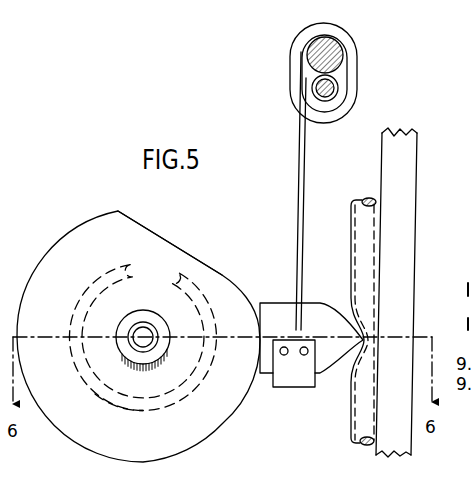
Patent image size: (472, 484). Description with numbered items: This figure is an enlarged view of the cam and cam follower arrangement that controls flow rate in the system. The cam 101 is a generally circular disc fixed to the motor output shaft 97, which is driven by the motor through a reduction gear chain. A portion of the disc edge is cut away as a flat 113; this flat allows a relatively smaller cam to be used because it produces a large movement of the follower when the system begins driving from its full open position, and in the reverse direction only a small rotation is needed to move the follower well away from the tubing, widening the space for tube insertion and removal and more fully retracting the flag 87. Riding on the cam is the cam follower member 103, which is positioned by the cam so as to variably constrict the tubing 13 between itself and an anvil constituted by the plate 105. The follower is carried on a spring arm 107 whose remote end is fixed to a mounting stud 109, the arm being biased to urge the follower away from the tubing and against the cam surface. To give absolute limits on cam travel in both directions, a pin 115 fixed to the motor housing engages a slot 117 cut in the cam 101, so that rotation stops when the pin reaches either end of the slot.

The cam 101 is at (218, 422).
The flat 113 is at (163, 238).
The output shaft 97 is at (143, 330).
The pin 115 is at (214, 338).
The slot 117 is at (130, 409).
The cam follower member 103 is at (277, 310).
The flag 87 is at (298, 378).
The spring arm 107 is at (300, 168).
The mounting stud 109 is at (295, 80).
The plate 105 is at (388, 154).
The tubing 13 is at (360, 227).